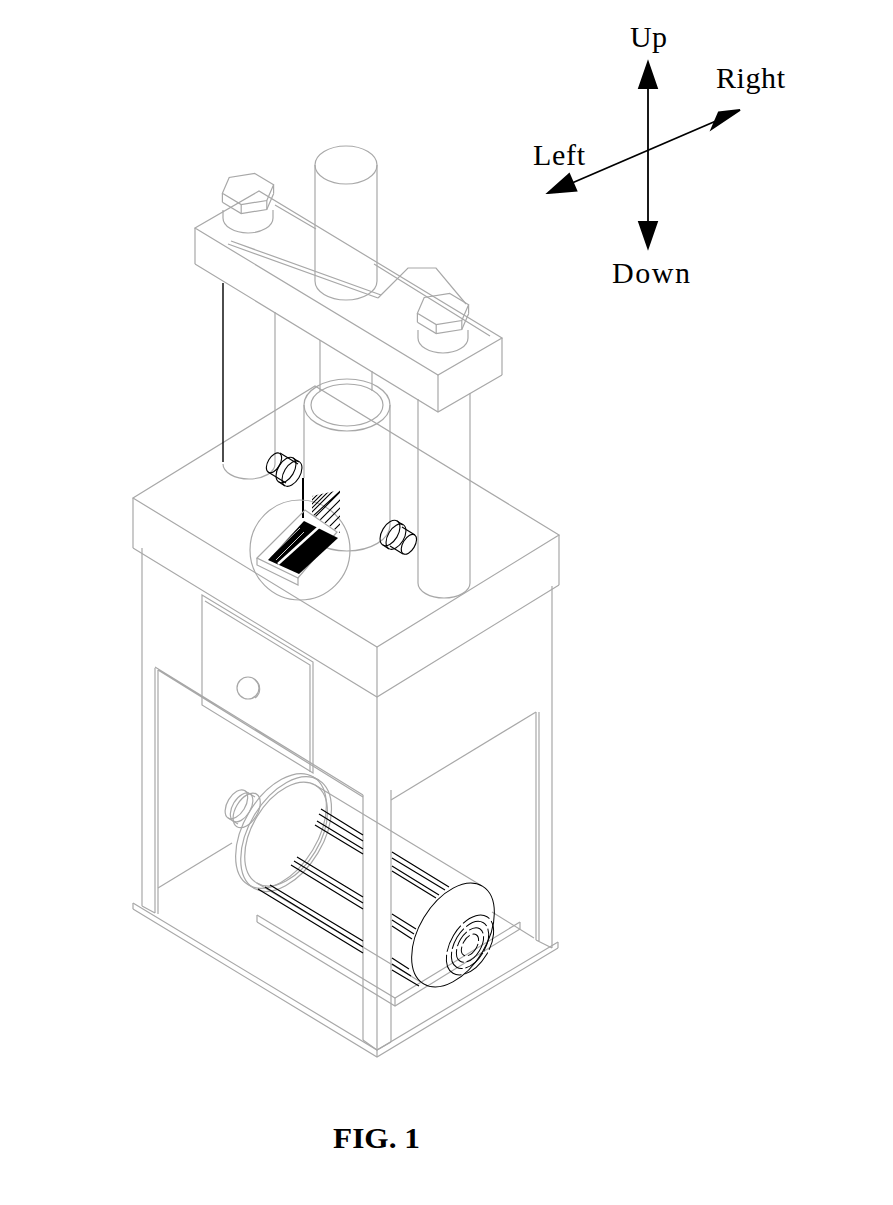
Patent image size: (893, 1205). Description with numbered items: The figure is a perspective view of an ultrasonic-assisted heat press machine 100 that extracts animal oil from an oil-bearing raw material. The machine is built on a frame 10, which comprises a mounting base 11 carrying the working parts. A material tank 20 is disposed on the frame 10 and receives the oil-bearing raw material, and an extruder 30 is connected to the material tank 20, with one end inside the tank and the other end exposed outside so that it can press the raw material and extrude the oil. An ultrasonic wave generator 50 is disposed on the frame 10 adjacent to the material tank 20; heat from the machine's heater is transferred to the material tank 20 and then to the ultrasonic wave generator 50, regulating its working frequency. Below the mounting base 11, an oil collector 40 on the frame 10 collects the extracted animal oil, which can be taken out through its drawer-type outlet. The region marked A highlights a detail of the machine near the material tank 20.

The ultrasonic-assisted heat press machine 100 is at (343, 132).
The frame 10 is at (542, 803).
The mounting base 11 is at (508, 528).
The material tank 20 is at (365, 477).
The extruder 30 is at (353, 252).
The oil collector 40 is at (182, 620).
The ultrasonic wave generator 50 is at (283, 475).
The detail region A is at (252, 545).